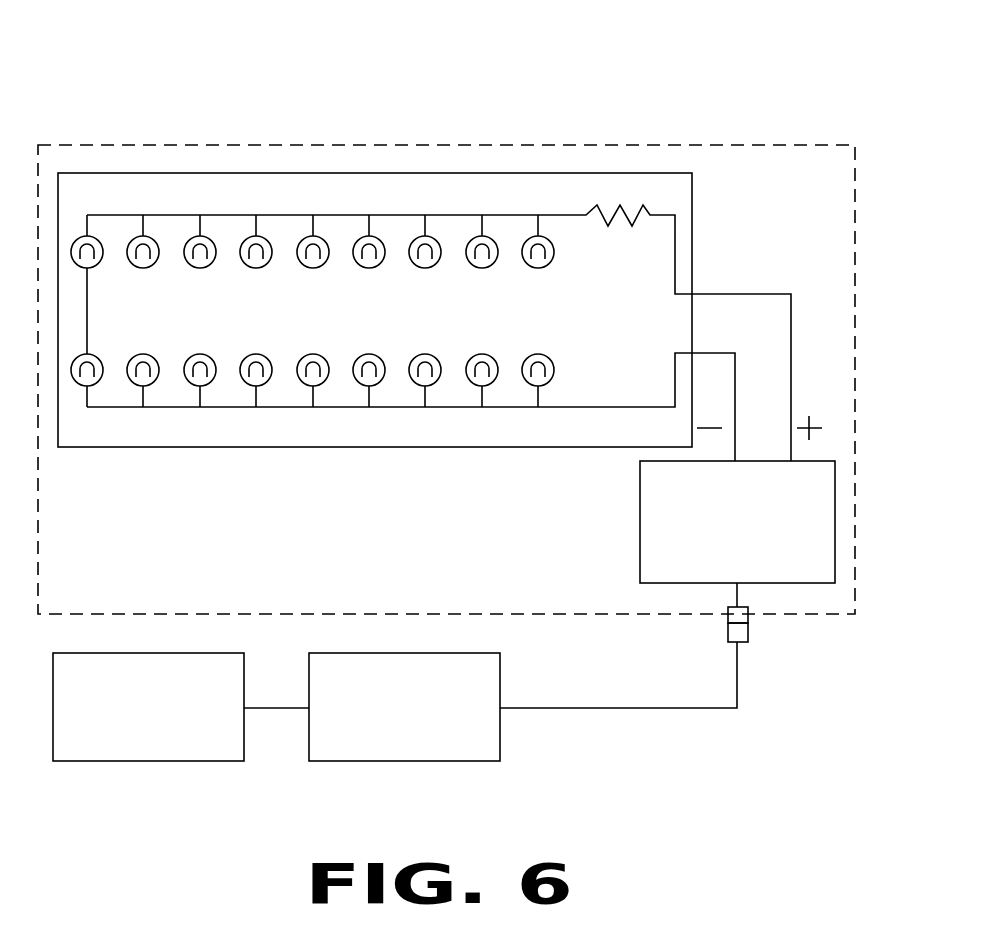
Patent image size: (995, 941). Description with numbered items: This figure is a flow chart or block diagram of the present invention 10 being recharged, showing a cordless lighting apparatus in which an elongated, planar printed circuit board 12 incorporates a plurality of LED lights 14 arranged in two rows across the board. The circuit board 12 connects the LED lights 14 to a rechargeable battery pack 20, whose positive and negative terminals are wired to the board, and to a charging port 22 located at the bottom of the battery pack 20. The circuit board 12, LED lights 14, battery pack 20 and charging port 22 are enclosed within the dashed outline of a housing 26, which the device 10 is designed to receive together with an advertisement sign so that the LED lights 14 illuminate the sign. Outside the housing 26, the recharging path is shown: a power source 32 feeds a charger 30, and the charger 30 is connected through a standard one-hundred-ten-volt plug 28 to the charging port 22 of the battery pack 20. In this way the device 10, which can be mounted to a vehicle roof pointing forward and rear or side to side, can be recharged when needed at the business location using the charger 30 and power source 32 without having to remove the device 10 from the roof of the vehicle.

The cordless lighting apparatus 10 is at (739, 115).
The printed circuit board 12 is at (290, 207).
The LED lights 14 is at (438, 330).
The rechargeable battery pack 20 is at (763, 568).
The charging port 22 is at (728, 612).
The housing 26 is at (433, 145).
The standard 110V plug 28 is at (740, 636).
The charger 30 is at (387, 747).
The power source 32 is at (128, 747).